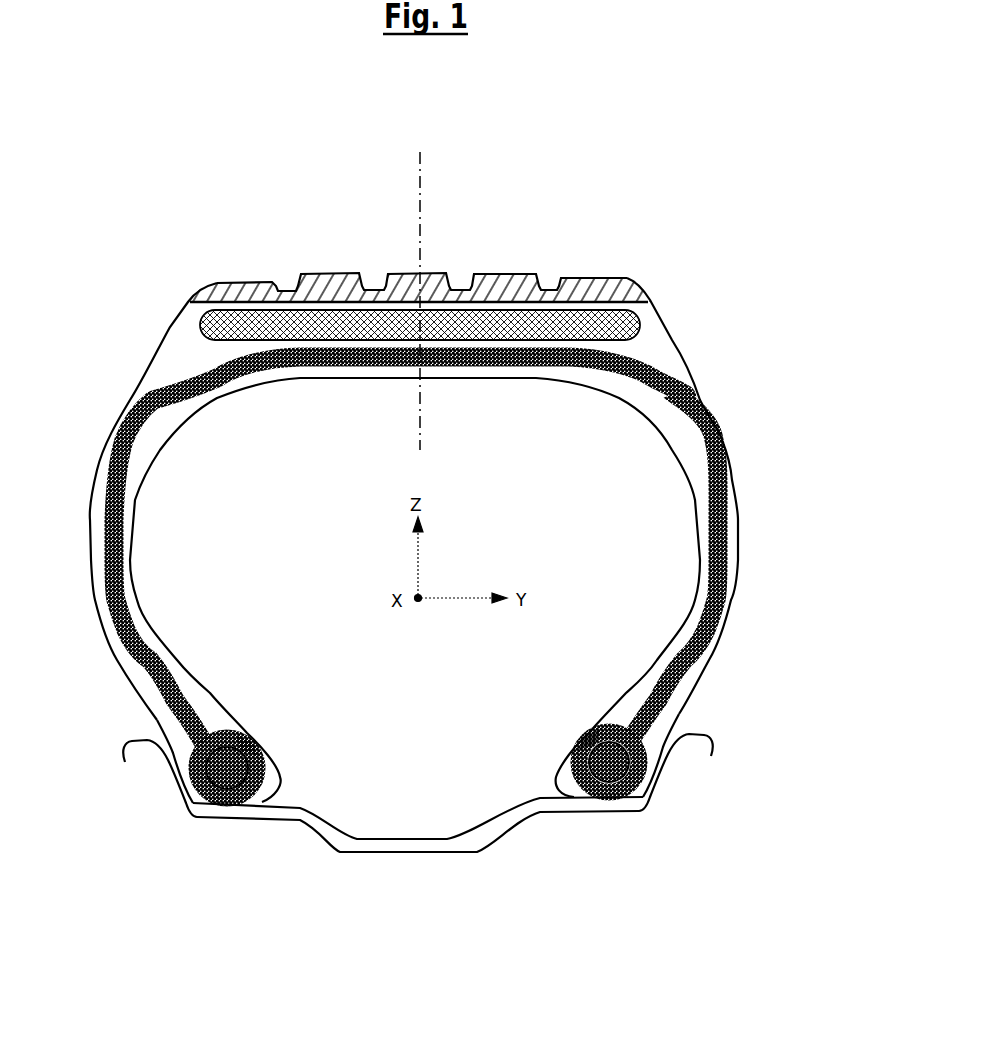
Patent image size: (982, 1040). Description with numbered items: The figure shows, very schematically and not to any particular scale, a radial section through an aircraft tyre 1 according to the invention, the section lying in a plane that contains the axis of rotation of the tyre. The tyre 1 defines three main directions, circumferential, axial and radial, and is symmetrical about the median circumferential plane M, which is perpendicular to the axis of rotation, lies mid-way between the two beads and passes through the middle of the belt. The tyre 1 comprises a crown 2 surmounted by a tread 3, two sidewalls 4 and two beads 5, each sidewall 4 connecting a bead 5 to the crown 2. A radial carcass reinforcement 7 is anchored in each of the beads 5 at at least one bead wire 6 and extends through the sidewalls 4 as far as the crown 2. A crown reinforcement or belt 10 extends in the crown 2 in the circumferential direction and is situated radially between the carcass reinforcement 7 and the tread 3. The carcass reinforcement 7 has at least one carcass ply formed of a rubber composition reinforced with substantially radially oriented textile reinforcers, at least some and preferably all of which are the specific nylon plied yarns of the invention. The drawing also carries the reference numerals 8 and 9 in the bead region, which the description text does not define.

The aircraft tyre 1 is at (763, 464).
The crown 2 is at (681, 298).
The tread 3 is at (515, 283).
The sidewall 4 is at (97, 542).
The bead 5 is at (257, 793).
The bead wire 6 is at (223, 768).
The radial carcass reinforcement 7 is at (112, 463).
The bead filler 8 is at (190, 740).
The rim flange 9 is at (182, 780).
The crown reinforcement or belt 10 is at (202, 323).
The median circumferential plane M is at (430, 160).